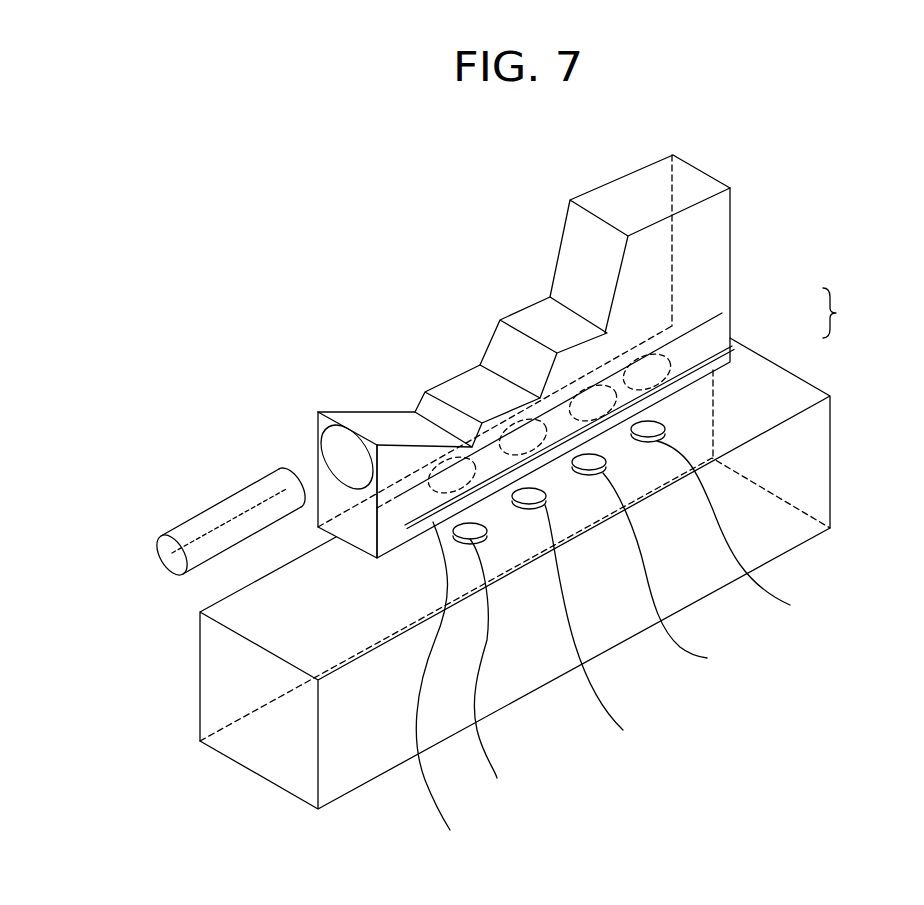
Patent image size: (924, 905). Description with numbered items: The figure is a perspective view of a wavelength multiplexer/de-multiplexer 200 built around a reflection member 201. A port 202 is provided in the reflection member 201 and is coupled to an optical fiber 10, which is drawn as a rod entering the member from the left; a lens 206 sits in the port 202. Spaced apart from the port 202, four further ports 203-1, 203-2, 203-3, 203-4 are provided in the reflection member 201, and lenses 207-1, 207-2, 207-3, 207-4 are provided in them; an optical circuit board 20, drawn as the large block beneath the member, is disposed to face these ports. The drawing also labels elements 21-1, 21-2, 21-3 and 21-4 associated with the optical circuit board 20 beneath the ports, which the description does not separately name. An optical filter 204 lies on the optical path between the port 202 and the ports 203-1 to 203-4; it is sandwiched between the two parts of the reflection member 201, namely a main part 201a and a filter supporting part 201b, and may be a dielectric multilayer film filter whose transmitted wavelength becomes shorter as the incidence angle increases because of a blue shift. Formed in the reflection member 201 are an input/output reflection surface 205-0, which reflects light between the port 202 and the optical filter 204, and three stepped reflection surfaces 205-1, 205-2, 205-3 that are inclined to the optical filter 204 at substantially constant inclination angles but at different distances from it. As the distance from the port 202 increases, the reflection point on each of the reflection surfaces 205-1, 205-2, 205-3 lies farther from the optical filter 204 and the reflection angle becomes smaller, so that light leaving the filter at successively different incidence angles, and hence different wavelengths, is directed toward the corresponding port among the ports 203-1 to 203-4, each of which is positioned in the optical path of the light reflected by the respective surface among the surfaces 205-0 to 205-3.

The optical fiber 10 is at (200, 514).
The optical circuit board 20 is at (817, 462).
The first channel in base block 21-1 is at (501, 675).
The second channel in base block 21-2 is at (608, 625).
The third channel in base block 21-3 is at (681, 574).
The fourth channel in base block 21-4 is at (746, 531).
The wavelength multiplexer/de-multiplexer 200 is at (275, 268).
The reflection member 201 is at (845, 313).
The main part 201a is at (718, 307).
The filter supporting part 201b is at (730, 347).
The port 202 is at (357, 430).
The port 203-1 is at (529, 504).
The port 203-2 is at (592, 475).
The port 203-3 is at (600, 343).
The port 203-4 is at (613, 350).
The optical filter 204 is at (452, 683).
The input/output reflection surface 205-0 is at (387, 420).
The reflection surface 205-1 is at (469, 385).
The reflection surface 205-2 is at (532, 320).
The reflection surface 205-3 is at (632, 192).
The lens 206 is at (328, 460).
The lens 207-1 is at (505, 487).
The lens 207-2 is at (575, 450).
The lens 207-3 is at (603, 433).
The lens 207-4 is at (658, 399).